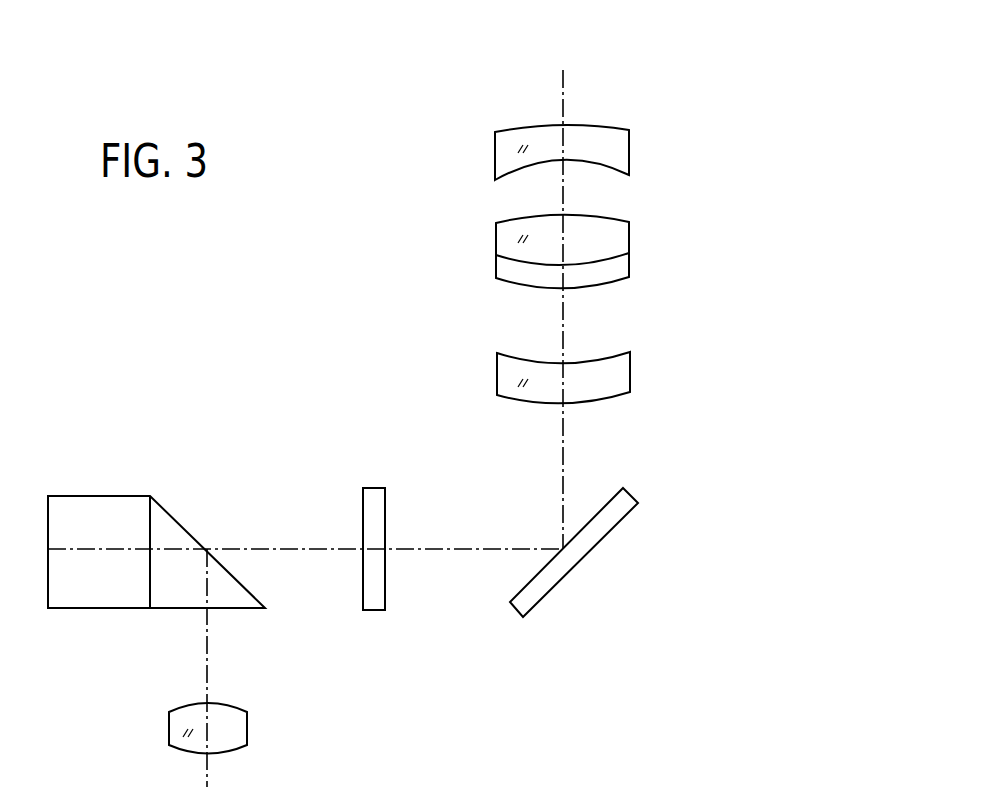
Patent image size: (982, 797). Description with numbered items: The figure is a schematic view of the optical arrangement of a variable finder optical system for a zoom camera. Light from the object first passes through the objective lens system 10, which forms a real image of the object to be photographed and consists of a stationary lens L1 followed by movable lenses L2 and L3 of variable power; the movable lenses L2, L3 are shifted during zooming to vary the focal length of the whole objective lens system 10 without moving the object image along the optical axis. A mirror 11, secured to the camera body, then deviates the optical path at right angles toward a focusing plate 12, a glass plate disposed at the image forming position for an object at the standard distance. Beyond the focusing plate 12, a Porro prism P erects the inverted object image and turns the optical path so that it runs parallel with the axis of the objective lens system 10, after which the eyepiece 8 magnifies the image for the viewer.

The objective lens system 10 is at (622, 107).
The stationary lens L1 is at (618, 157).
The movable lens L2 is at (618, 237).
The movable lens L3 is at (617, 380).
The mirror 11 is at (597, 547).
The focusing plate 12 is at (375, 487).
The Porro prism P is at (83, 598).
The eyepiece 8 is at (247, 722).